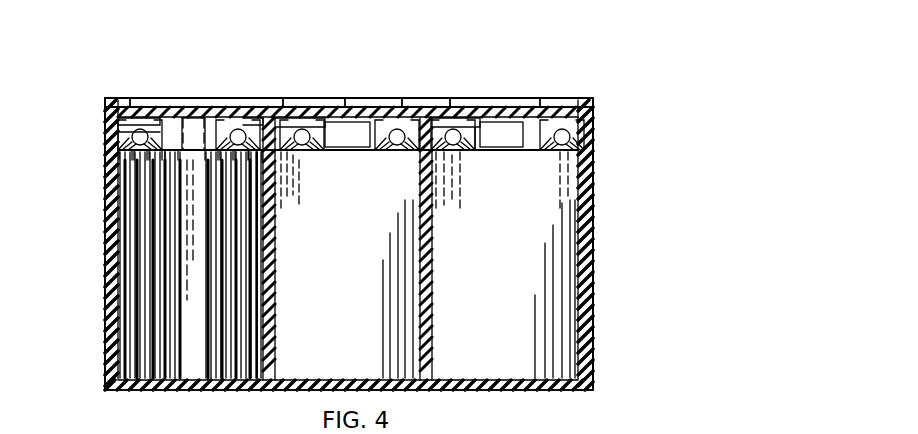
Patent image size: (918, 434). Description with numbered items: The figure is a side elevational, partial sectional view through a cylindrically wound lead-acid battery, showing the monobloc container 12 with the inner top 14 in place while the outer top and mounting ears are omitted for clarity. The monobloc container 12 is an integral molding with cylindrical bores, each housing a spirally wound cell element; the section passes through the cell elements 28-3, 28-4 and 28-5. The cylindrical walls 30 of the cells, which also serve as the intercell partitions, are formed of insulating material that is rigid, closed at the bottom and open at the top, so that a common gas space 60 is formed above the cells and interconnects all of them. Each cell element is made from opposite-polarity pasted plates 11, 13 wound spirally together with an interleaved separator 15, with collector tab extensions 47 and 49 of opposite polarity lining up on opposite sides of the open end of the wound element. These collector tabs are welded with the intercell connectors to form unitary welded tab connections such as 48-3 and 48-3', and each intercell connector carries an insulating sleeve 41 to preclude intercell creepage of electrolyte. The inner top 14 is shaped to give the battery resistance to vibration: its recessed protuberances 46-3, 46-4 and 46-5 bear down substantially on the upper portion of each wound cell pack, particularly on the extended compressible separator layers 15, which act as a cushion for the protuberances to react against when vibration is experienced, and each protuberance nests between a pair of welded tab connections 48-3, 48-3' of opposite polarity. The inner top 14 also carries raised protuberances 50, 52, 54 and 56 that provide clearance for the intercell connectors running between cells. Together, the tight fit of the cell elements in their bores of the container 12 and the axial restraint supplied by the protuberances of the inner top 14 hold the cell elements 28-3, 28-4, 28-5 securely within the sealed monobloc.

The pasted plate 11 is at (118, 208).
The monobloc container 12 is at (593, 272).
The pasted plate 13 is at (254, 297).
The inner top 14 is at (594, 106).
The separator 15 is at (186, 140).
The cell element 28-3 is at (137, 302).
The cell element 28-4 is at (402, 292).
The cell element 28-5 is at (568, 318).
The cylindrical wall 30 is at (277, 262).
The insulating sleeve 41 is at (281, 116).
The recessed protuberance 46-3 is at (206, 128).
The recessed protuberance 46-4 is at (341, 128).
The recessed protuberance 46-5 is at (538, 100).
The collector tab extension 47 is at (146, 134).
The welded tab connection 48-3 is at (89, 137).
The welded tab connection 48-3' is at (310, 165).
The collector tab extension 49 is at (270, 170).
The raised protuberance 50 is at (128, 98).
The raised protuberance 52 is at (280, 112).
The raised protuberance 54 is at (467, 127).
The raised protuberance 56 is at (594, 98).
The common gas space 60 is at (135, 125).